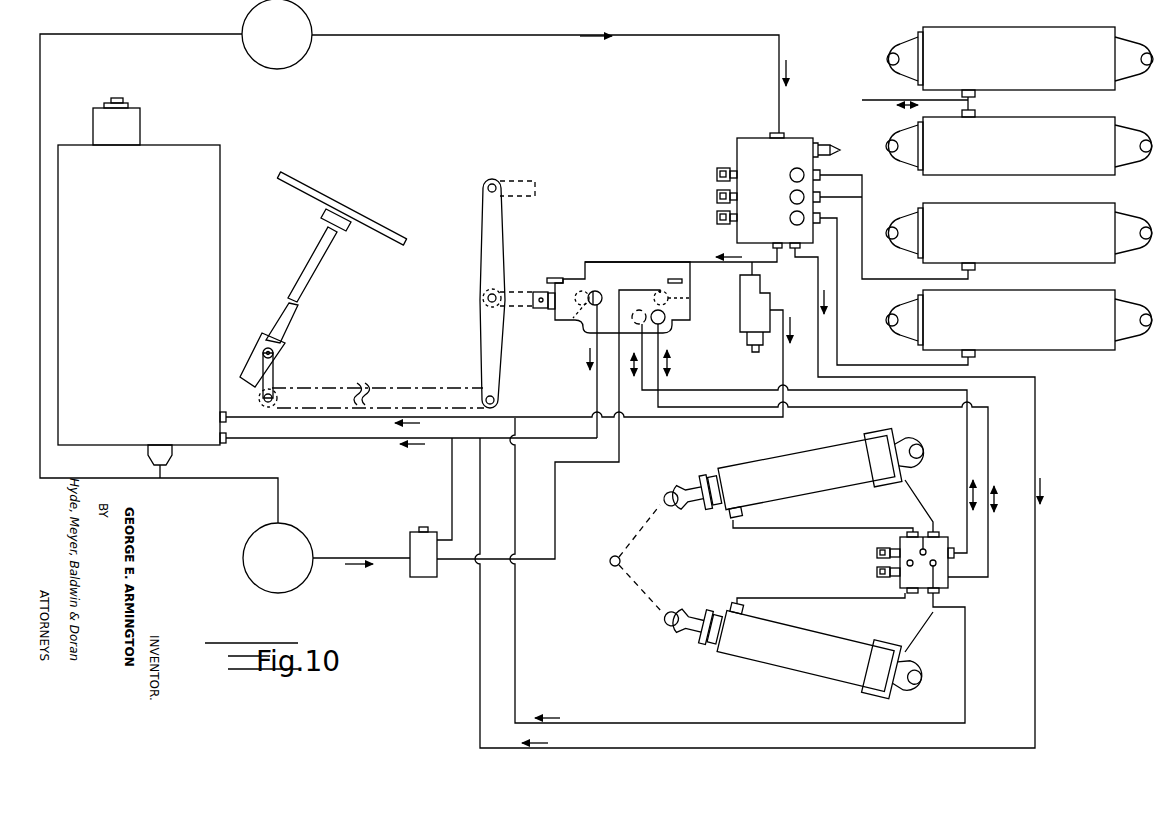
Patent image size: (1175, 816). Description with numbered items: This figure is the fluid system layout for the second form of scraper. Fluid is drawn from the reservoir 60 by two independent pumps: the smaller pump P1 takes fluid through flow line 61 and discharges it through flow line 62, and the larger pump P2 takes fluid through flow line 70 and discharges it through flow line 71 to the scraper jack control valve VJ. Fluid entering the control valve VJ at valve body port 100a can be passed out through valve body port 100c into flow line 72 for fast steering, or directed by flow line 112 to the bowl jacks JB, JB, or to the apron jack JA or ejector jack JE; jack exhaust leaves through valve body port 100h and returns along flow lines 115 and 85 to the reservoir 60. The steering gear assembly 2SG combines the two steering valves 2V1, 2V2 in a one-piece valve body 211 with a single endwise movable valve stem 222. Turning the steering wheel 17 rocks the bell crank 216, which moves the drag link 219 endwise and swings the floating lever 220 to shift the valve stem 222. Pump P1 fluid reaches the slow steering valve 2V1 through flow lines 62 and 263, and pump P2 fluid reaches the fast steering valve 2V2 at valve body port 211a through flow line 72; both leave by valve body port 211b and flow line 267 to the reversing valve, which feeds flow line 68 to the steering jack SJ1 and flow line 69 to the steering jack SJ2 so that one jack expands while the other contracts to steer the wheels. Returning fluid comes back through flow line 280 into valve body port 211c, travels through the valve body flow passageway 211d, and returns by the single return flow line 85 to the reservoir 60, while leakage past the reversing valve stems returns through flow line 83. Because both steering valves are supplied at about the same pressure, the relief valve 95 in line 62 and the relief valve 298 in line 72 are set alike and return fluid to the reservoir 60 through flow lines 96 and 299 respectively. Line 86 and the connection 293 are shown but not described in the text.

The steering wheel 17 is at (356, 214).
The reservoir 60 is at (142, 288).
The flow line 61 is at (226, 480).
The flow line 62 is at (352, 556).
The flow line 68 is at (918, 518).
The flow line 69 is at (826, 598).
The flow line 70 is at (127, 34).
The flow line 71 is at (488, 35).
The flow line 72 is at (702, 262).
The flow line 83 is at (516, 486).
The return flow line 85 is at (596, 375).
The return line 86 is at (368, 442).
The relief valve 95 is at (410, 540).
The flow line 96 is at (451, 480).
The valve body port 100a is at (780, 134).
The valve body port 100c is at (770, 247).
The valve body port 100h is at (799, 248).
The flow line 112 is at (878, 94).
The flow line 115 is at (818, 292).
The valve body 211 is at (626, 278).
The valve body port 211a is at (566, 330).
The valve body port 211b is at (664, 322).
The valve body port 211c is at (599, 290).
The valve body flow passageway 211d is at (691, 298).
The bell crank 216 is at (275, 380).
The drag link 219 is at (320, 280).
The floating lever 220 is at (480, 348).
The valve stem 222 is at (540, 309).
The flow line 263 is at (620, 440).
The flow line 267 is at (688, 408).
The flow line 280 is at (708, 390).
The connection 293 is at (537, 181).
The relief valve 298 is at (755, 307).
The flow line 299 is at (332, 418).
The steering gear assembly 2SG is at (490, 178).
The steering valve 2V1 is at (677, 276).
The steering valve 2V2 is at (576, 276).
The scraper jack control valve VJ is at (778, 190).
The apron jack JA is at (1019, 236).
The bowl jack JB is at (1019, 101).
The ejector jack JE is at (986, 291).
The pump P1 is at (278, 558).
The pump P2 is at (277, 34).
The steering jack SJ1 is at (794, 476).
The steering jack SJ2 is at (793, 646).